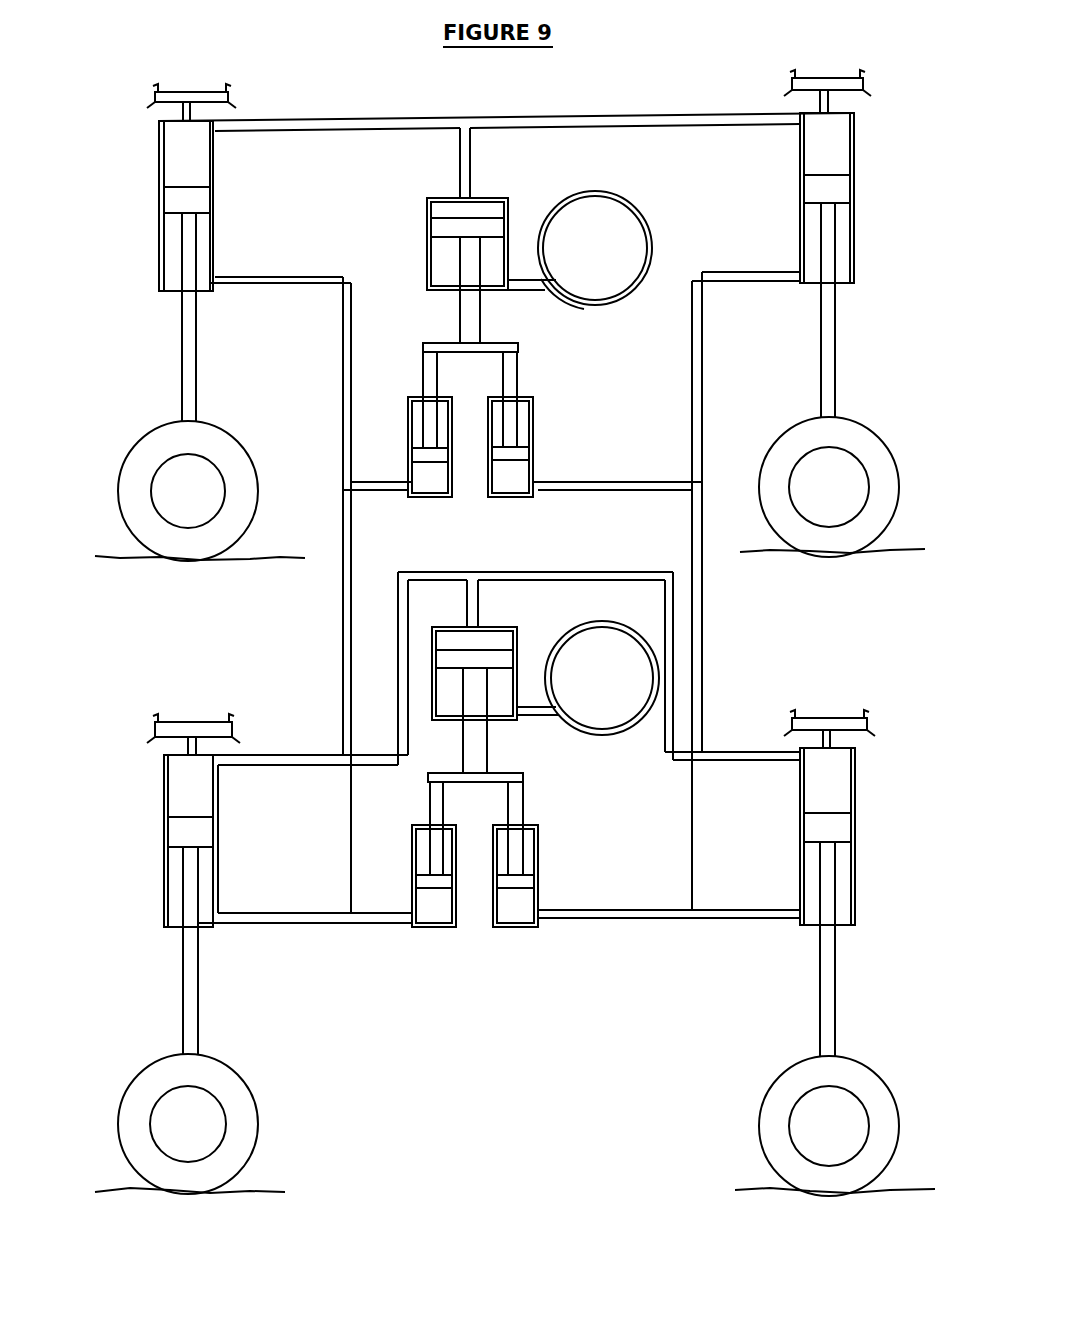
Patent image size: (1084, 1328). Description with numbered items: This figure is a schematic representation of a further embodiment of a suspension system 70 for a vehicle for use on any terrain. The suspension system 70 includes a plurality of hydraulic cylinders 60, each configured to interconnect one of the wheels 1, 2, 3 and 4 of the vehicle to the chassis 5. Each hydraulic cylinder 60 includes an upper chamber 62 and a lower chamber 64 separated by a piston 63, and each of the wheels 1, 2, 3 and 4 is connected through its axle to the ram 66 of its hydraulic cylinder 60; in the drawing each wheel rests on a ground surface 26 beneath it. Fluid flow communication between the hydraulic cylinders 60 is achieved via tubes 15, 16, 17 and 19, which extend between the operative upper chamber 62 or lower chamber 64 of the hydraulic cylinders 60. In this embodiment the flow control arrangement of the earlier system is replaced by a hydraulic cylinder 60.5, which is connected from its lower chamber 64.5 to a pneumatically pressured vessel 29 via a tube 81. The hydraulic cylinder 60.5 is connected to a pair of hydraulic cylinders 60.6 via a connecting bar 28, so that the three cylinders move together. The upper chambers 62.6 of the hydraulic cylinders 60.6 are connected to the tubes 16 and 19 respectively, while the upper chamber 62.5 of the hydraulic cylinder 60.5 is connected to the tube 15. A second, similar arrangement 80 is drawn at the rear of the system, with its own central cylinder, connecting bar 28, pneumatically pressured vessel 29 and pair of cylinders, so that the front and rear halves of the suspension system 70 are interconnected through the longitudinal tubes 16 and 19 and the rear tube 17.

The wheel 1 is at (798, 433).
The wheel 2 is at (223, 453).
The wheel 3 is at (860, 1080).
The wheel 4 is at (152, 1073).
The chassis 5 is at (203, 96).
The tube 15 is at (458, 121).
The tube 16 is at (703, 609).
The tube 17 is at (318, 762).
The tube 19 is at (343, 620).
The ground surface 26 is at (272, 558).
The connecting bar 28 is at (492, 350).
The pneumatically pressured vessel 29 is at (598, 225).
The hydraulic cylinder 60 is at (156, 192).
The hydraulic cylinder 60.5 is at (510, 190).
The hydraulic cylinders 60.6 is at (400, 410).
The upper chamber 62 is at (193, 168).
The upper chamber 62.5 is at (458, 208).
The upper chambers 62.6 is at (425, 486).
The piston 63 is at (185, 210).
The lower chamber 64 is at (207, 246).
The lower chamber 64.5 is at (440, 269).
The ram 66 is at (185, 321).
The suspension system 70 is at (595, 88).
The rear fluid chamber housing 80 is at (525, 620).
The tube 81 is at (545, 290).